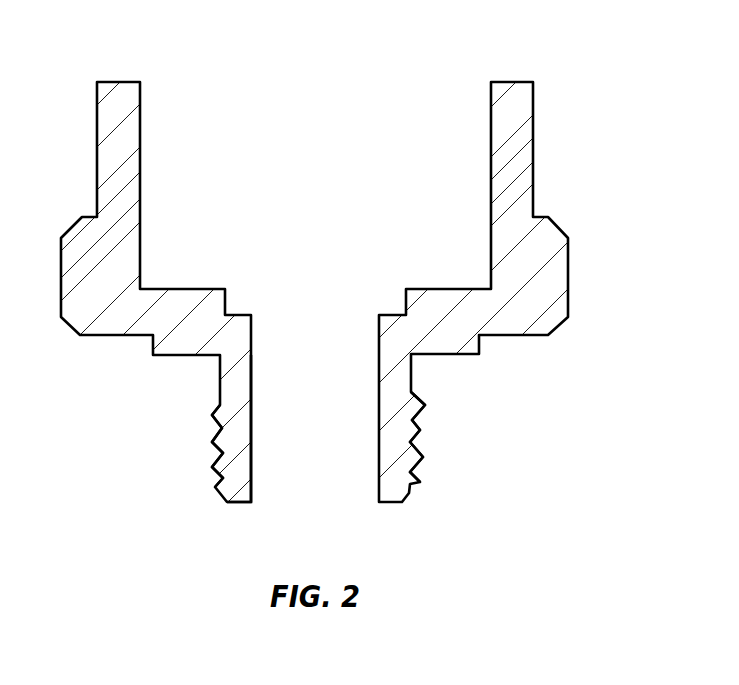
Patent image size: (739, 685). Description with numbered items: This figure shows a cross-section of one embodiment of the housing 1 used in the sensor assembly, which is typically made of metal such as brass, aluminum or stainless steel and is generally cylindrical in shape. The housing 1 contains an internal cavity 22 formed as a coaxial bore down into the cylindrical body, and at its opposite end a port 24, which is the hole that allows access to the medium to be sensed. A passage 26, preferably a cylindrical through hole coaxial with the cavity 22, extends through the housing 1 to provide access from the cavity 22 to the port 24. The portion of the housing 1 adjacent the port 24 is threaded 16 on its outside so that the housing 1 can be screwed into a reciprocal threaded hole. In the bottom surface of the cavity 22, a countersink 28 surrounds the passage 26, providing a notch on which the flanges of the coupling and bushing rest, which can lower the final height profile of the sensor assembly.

The housing 1 is at (98, 115).
The threaded portion 16 is at (394, 429).
The internal cavity 22 is at (381, 133).
The port 24 is at (297, 480).
The passage 26 is at (278, 418).
The countersink 28 is at (395, 300).